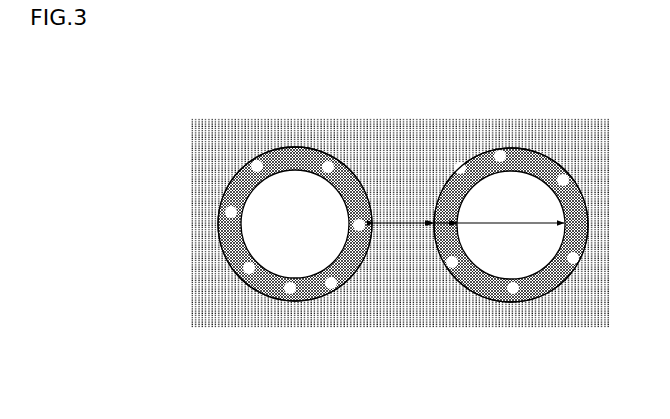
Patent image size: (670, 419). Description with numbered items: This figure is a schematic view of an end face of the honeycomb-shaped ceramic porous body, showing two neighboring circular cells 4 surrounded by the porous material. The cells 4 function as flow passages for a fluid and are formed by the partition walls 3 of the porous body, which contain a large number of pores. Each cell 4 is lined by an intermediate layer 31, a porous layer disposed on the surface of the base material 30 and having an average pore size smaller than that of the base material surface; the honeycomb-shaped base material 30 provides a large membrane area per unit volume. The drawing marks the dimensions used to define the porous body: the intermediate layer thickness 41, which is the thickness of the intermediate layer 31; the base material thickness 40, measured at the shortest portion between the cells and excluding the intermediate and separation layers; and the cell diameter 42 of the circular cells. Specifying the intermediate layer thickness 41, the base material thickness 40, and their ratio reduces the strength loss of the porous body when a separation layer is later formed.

The partition walls 3 is at (400, 230).
The cells 4 is at (403, 230).
The base material 30 is at (577, 287).
The intermediate layer 31 is at (300, 300).
The base material thickness 40 is at (403, 222).
The intermediate layer thickness 41 is at (445, 222).
The cell diameter 42 is at (492, 220).